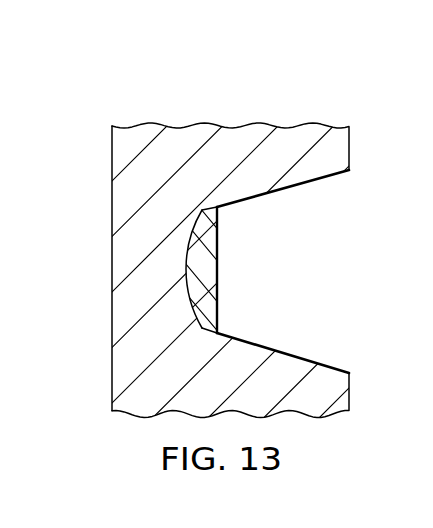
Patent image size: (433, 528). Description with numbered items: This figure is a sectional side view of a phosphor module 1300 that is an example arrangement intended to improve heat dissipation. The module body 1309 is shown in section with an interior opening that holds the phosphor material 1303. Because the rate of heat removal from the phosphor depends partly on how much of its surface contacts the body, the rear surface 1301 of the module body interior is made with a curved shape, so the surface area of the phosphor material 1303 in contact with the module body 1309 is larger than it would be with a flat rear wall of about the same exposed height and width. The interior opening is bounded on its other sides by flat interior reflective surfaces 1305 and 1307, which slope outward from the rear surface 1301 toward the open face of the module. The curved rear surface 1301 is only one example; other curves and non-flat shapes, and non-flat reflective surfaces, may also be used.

The phosphor module 1300 is at (162, 79).
The rear surface 1301 is at (217, 236).
The phosphor material 1303 is at (207, 300).
The interior reflective surface 1305 is at (315, 179).
The interior reflective surface 1307 is at (333, 367).
The module body 1309 is at (112, 316).